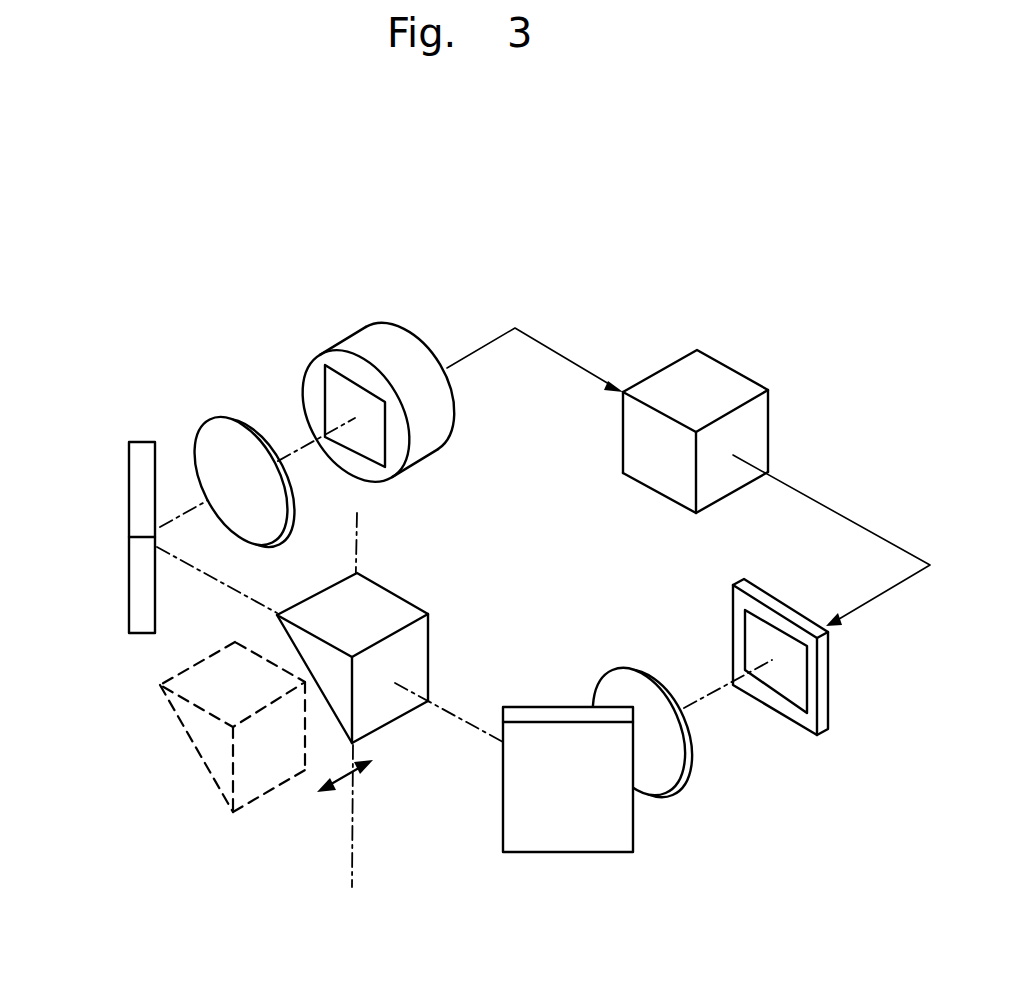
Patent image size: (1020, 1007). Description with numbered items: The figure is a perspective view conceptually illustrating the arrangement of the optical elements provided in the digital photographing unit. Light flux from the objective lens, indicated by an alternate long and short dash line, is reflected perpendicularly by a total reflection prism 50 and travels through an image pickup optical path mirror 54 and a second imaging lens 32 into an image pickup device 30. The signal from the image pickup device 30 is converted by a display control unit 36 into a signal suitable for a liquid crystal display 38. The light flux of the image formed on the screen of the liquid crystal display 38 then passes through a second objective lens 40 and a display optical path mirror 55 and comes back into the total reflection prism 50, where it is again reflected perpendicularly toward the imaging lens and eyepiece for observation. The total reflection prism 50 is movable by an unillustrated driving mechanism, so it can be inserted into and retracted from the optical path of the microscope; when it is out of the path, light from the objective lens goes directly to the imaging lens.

The image pickup device 30 is at (358, 343).
The second imaging lens 32 is at (215, 424).
The image pickup optical path mirror 54 is at (133, 462).
The display control unit 36 is at (723, 372).
The liquid crystal display 38 is at (828, 720).
The second objective lens 40 is at (693, 775).
The display optical path mirror 55 is at (551, 843).
The total reflection prism 50 is at (393, 713).